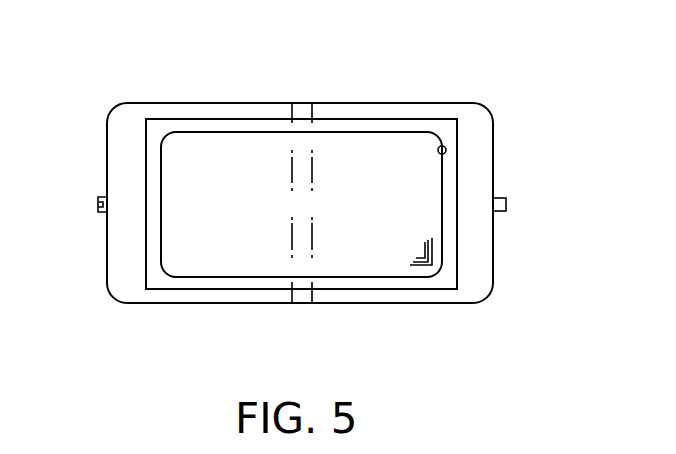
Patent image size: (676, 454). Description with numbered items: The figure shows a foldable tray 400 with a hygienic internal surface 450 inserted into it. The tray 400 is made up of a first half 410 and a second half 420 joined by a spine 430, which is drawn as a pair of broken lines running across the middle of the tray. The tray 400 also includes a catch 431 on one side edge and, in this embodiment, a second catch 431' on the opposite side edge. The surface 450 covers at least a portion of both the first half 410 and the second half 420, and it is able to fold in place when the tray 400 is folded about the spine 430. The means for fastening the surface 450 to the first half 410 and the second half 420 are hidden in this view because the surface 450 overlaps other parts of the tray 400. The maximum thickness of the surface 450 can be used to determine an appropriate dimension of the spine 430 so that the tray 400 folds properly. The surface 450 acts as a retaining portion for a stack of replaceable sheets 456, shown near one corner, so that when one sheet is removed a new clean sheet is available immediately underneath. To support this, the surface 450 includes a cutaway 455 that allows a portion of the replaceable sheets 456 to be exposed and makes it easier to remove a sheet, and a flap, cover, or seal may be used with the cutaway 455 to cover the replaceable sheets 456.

The tray 400 is at (112, 62).
The first half 410 is at (168, 303).
The second half 420 is at (445, 303).
The spine 430 is at (302, 103).
The catch 431 is at (543, 208).
The catch 431' is at (60, 201).
The surface 450 is at (393, 118).
The cutaway 455 is at (446, 150).
The replaceable sheets 456 is at (420, 265).